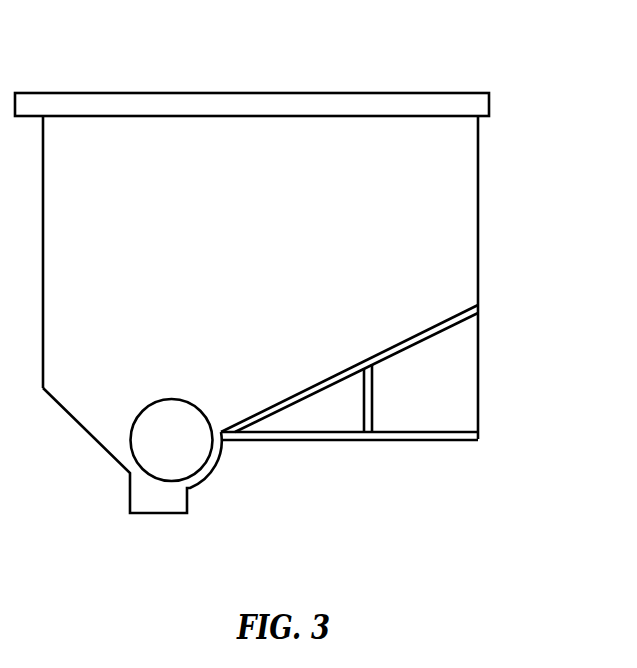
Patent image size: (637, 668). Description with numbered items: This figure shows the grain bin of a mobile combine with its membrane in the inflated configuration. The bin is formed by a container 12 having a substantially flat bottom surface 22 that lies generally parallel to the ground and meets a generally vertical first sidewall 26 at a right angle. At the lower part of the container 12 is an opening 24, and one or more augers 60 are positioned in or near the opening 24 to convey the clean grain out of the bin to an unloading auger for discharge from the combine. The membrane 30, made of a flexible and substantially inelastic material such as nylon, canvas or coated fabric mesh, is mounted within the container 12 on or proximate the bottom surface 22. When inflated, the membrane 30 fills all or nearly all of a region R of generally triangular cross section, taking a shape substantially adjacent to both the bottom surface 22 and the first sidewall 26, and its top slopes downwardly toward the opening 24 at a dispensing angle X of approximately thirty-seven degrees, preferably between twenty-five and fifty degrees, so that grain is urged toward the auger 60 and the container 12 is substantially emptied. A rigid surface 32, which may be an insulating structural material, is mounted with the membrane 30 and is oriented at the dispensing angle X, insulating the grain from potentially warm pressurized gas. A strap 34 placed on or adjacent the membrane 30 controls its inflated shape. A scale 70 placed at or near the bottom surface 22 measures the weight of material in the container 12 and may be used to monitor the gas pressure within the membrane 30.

The container 12 is at (466, 51).
The bottom surface 22 is at (441, 431).
The opening 24 is at (157, 514).
The first sidewall 26 is at (478, 211).
The membrane 30 is at (438, 333).
The rigid surface 32 is at (424, 330).
The strap 34 is at (362, 412).
The auger 60 is at (147, 438).
The scale 70 is at (460, 441).
The region R is at (443, 365).
The dispensing angle X is at (311, 403).